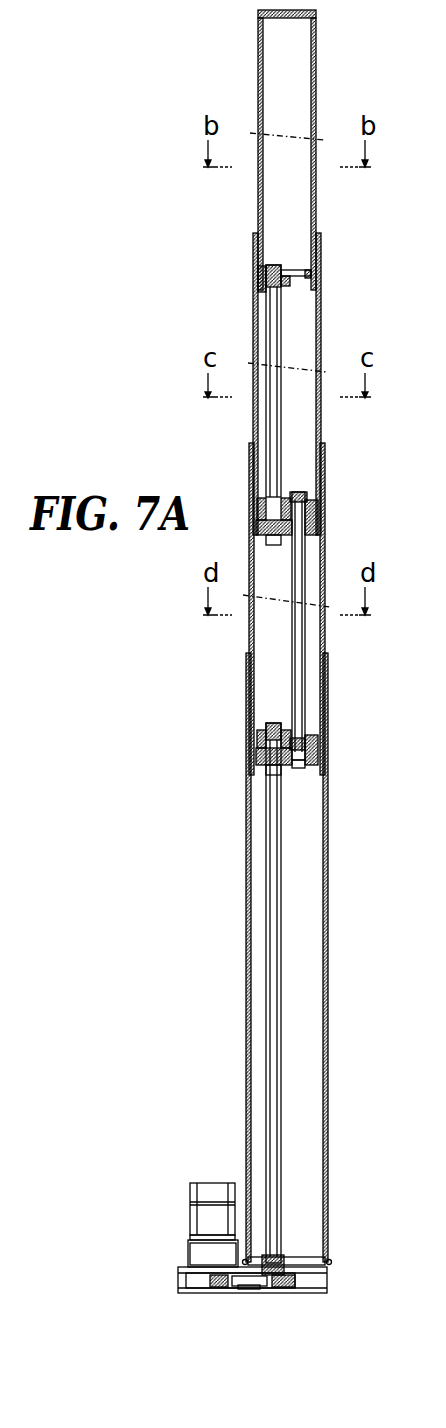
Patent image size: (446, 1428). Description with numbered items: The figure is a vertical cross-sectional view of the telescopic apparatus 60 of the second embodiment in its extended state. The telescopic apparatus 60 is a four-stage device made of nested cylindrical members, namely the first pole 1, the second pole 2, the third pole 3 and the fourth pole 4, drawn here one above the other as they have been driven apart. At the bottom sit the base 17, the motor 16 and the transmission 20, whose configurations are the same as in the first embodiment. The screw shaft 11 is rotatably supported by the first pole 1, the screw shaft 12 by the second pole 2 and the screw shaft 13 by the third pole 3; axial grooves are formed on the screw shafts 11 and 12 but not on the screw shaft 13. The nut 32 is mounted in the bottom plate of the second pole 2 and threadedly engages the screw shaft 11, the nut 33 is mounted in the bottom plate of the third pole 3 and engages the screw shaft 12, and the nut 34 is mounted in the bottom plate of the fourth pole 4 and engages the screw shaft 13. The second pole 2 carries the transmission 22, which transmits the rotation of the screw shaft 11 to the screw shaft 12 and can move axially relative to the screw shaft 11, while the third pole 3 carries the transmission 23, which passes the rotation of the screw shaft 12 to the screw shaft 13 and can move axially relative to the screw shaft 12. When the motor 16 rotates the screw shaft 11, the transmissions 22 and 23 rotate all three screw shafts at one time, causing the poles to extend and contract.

The telescopic apparatus 60 is at (171, 60).
The fourth pole 4 is at (316, 75).
The third pole 3 is at (321, 327).
The second pole 2 is at (325, 553).
The first pole 1 is at (328, 948).
The screw shaft 13 is at (268, 420).
The nut 34 is at (262, 267).
The screw shaft 12 is at (292, 690).
The transmission 23 is at (293, 492).
The nut 33 is at (320, 518).
The transmission 22 is at (293, 722).
The nut 32 is at (258, 750).
The screw shaft 11 is at (268, 891).
The motor 16 is at (205, 1222).
The base 17 is at (318, 1277).
The transmission 20 is at (248, 1290).